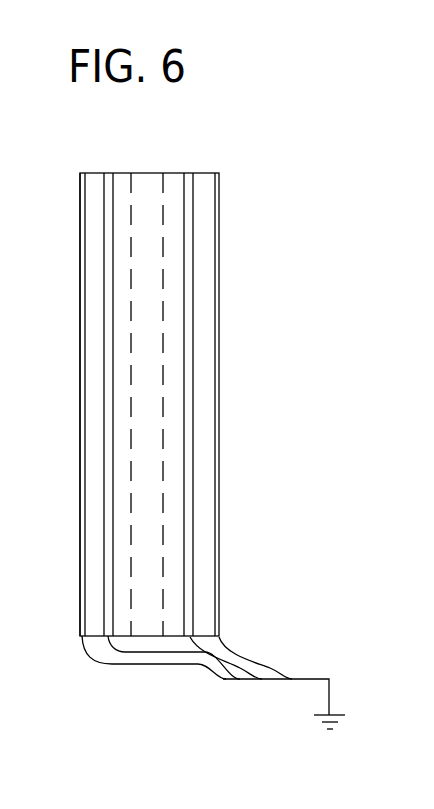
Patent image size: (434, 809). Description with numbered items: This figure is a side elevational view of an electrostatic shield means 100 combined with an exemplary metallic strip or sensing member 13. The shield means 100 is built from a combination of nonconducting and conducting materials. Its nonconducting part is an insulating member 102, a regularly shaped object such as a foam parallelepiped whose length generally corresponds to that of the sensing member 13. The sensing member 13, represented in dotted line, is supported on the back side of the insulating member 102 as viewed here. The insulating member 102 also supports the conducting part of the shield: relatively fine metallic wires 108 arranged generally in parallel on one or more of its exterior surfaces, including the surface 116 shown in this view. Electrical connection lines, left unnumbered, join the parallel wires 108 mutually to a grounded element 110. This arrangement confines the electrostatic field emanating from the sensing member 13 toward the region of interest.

The electrostatic shield means 100 is at (264, 508).
The insulating member 102 is at (88, 173).
The sensing member 13 is at (163, 188).
The metallic wires 108 is at (104, 322).
The surface 116 is at (95, 566).
The grounded element 110 is at (260, 679).